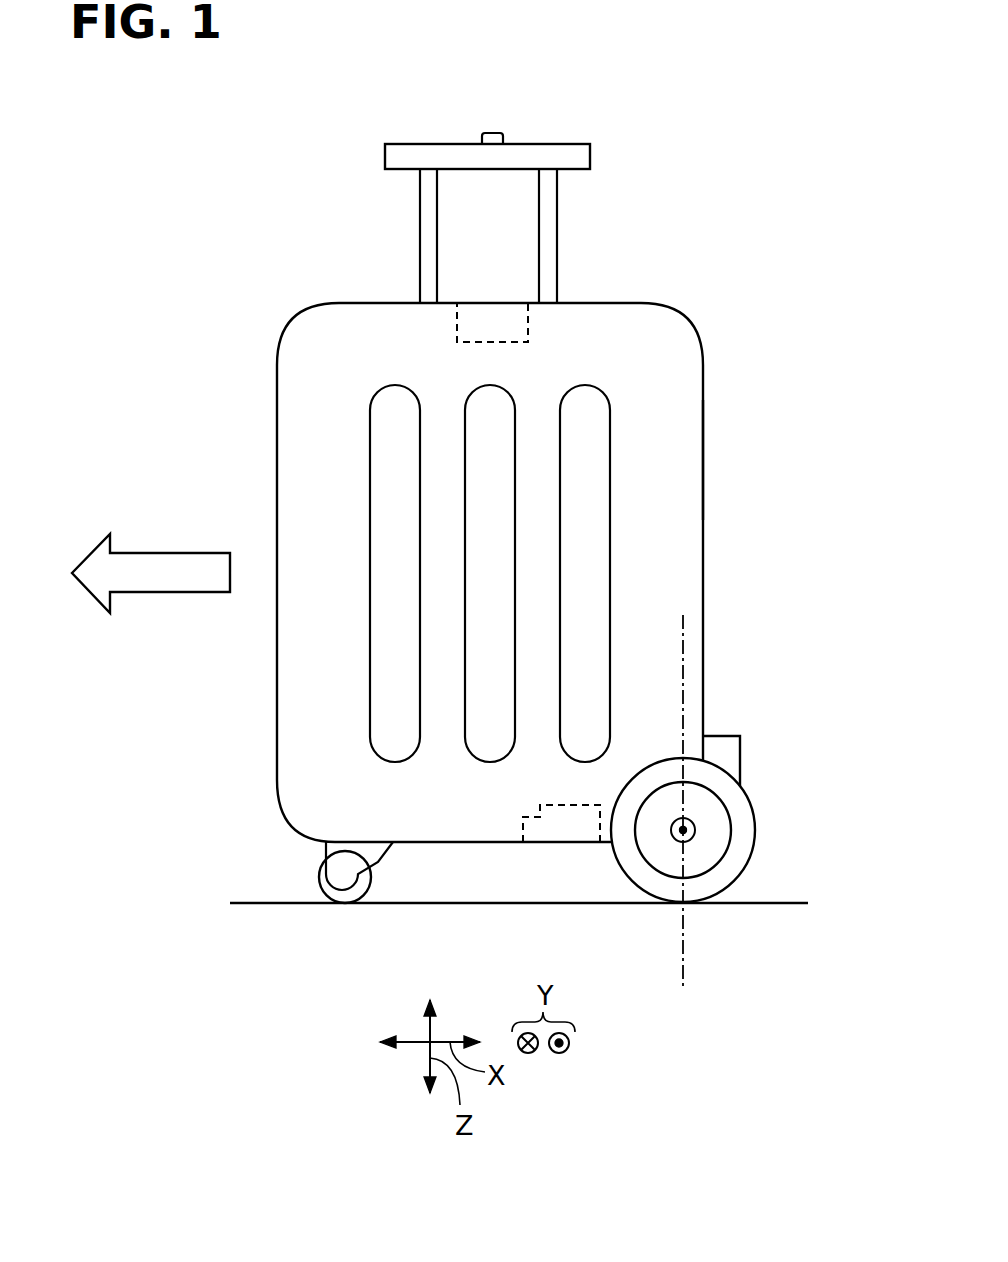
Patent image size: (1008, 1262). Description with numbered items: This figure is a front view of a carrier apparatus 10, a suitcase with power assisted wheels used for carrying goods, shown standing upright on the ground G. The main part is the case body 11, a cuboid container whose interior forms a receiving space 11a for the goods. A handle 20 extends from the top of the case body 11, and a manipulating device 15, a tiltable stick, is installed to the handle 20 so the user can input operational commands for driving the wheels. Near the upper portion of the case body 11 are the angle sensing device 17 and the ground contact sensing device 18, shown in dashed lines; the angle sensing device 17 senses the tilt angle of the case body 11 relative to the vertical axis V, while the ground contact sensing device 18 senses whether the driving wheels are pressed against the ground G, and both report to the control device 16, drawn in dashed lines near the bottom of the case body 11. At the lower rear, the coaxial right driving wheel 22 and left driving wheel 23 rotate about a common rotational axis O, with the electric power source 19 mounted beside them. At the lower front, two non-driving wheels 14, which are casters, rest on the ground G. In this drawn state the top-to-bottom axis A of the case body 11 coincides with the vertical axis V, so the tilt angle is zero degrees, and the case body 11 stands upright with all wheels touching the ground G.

The carrier apparatus 10 is at (712, 313).
The case body 11 is at (703, 557).
The receiving space 11a is at (662, 465).
The non-driving wheels 14 is at (314, 873).
The manipulating device 15 is at (492, 133).
The control device 16 is at (521, 842).
The angle sensing device 17 is at (560, 302).
The ground contact sensing device 18 is at (528, 322).
The electric power source 19 is at (740, 762).
The handle 20 is at (562, 199).
The right driving wheel 22 is at (745, 830).
The left driving wheel 23 is at (755, 830).
The ground G is at (755, 901).
The rotational axis O is at (687, 836).
The vertical axis V is at (734, 803).
The top-to-bottom axis A is at (685, 948).